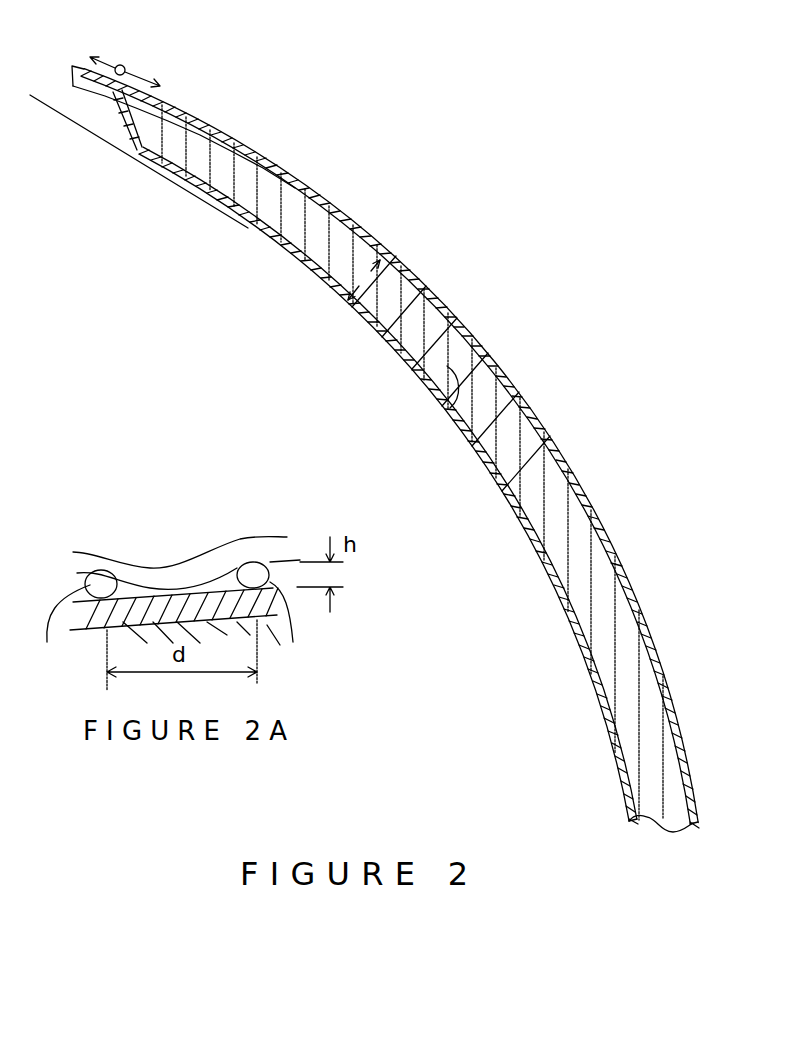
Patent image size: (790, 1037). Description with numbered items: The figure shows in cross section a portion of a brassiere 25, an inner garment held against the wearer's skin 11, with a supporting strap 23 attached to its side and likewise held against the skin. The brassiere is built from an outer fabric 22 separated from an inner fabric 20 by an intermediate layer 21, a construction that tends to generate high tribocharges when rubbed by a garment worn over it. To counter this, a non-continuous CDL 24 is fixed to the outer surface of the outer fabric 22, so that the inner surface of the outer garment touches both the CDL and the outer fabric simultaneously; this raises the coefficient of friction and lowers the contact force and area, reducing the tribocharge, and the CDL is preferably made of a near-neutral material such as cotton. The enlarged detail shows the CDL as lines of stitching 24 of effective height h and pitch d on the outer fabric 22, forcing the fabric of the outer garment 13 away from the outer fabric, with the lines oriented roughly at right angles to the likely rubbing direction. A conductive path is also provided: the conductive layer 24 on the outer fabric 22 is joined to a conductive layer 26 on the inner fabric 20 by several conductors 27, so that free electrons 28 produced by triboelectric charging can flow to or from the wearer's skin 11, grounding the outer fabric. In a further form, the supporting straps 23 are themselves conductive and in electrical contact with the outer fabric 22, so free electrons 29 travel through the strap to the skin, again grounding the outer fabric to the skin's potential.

In FIG. 2, the skin 11 is at (103, 138).
In FIG. 2A, the outer garment 13 is at (93, 558).
In FIG. 2, the inner fabric 20 is at (510, 493).
In FIG. 2, the intermediate layer 21 is at (507, 437).
In FIG. 2A, the intermediate layer 21 is at (100, 632).
In FIG. 2, the outer fabric 22 is at (574, 486).
In FIG. 2A, the outer fabric 22 is at (265, 620).
In FIG. 2, the supporting straps 23 is at (207, 132).
In FIG. 2, the CDL 24 is at (440, 310).
In FIG. 2A, the CDL 24 is at (75, 640).
In FIG. 2, the brassiere 25 is at (482, 243).
In FIG. 2, the conductive layer 26 is at (393, 353).
In FIG. 2, the conductor 27 is at (440, 417).
In FIG. 2, the free electrons 28 is at (380, 260).
In FIG. 2, the free electrons 29 is at (130, 62).